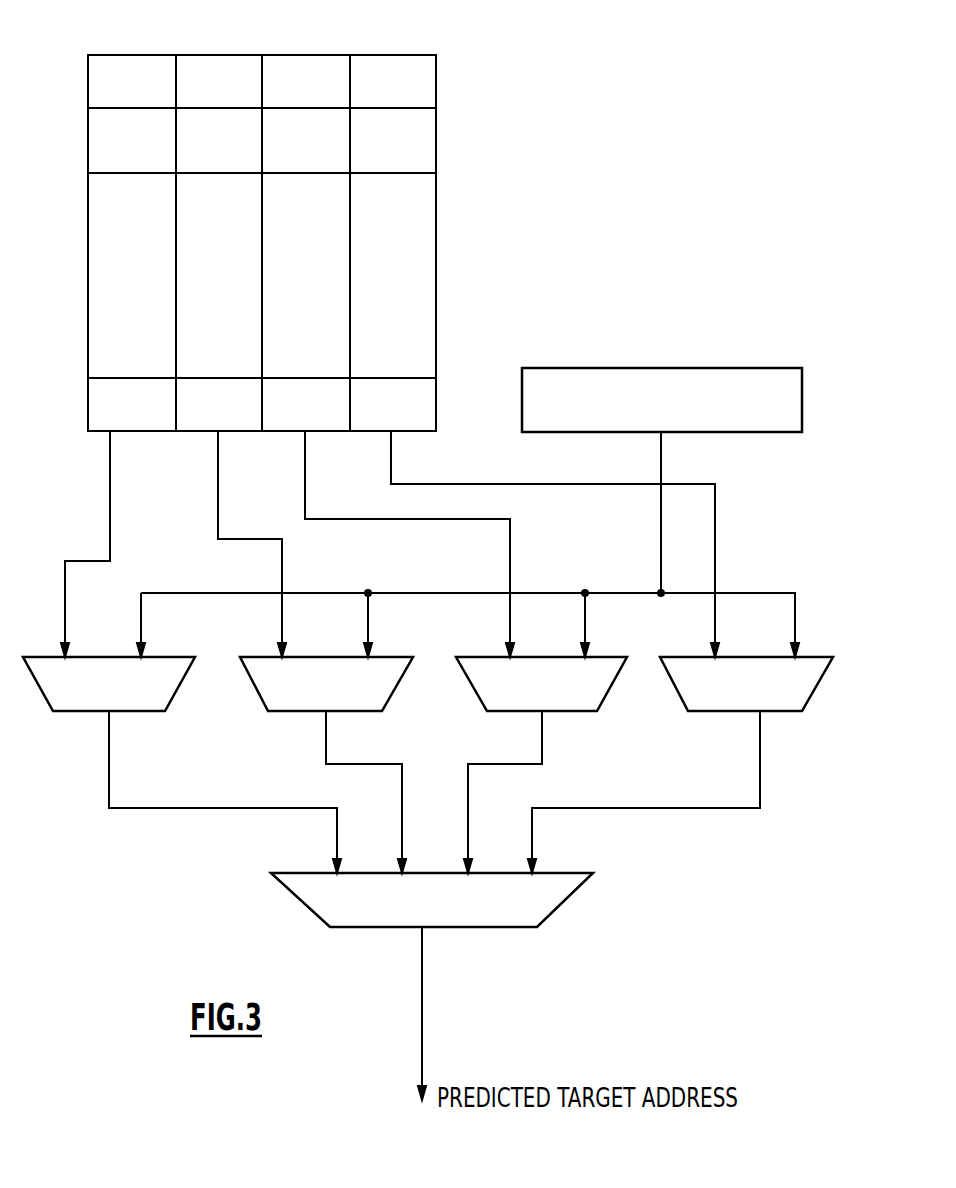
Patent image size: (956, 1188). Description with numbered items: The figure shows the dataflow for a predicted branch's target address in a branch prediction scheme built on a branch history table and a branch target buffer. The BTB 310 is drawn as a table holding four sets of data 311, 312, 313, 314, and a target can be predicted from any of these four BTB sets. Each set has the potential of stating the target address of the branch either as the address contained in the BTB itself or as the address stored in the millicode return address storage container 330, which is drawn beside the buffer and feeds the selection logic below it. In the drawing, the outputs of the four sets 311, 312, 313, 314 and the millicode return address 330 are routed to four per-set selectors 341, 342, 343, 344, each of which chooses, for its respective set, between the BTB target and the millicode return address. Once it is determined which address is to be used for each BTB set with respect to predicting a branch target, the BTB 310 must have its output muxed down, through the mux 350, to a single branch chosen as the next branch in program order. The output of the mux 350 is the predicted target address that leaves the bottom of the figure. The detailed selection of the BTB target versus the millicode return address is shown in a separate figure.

The BTB 310 is at (277, 221).
The BTB set 311 is at (114, 92).
The BTB set 312 is at (201, 92).
The BTB set 313 is at (288, 92).
The BTB set 314 is at (375, 92).
The millicode return address storage container 330 is at (792, 368).
The first multiplexer 341 is at (88, 701).
The second multiplexer 342 is at (305, 701).
The third multiplexer 343 is at (521, 701).
The fourth multiplexer 344 is at (725, 701).
The mux 350 is at (401, 915).